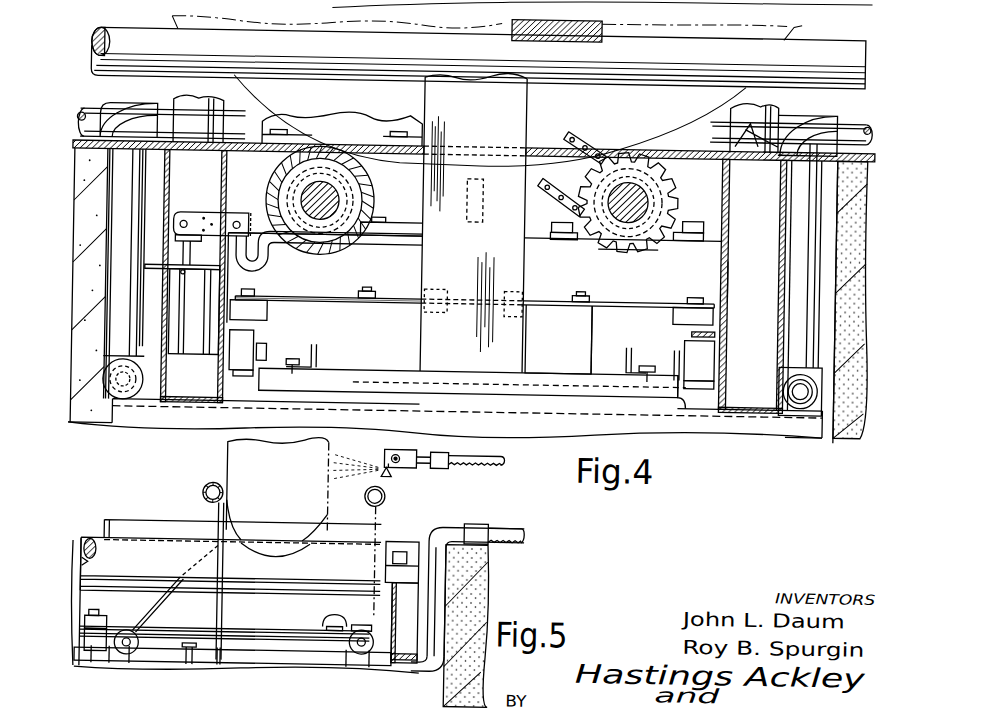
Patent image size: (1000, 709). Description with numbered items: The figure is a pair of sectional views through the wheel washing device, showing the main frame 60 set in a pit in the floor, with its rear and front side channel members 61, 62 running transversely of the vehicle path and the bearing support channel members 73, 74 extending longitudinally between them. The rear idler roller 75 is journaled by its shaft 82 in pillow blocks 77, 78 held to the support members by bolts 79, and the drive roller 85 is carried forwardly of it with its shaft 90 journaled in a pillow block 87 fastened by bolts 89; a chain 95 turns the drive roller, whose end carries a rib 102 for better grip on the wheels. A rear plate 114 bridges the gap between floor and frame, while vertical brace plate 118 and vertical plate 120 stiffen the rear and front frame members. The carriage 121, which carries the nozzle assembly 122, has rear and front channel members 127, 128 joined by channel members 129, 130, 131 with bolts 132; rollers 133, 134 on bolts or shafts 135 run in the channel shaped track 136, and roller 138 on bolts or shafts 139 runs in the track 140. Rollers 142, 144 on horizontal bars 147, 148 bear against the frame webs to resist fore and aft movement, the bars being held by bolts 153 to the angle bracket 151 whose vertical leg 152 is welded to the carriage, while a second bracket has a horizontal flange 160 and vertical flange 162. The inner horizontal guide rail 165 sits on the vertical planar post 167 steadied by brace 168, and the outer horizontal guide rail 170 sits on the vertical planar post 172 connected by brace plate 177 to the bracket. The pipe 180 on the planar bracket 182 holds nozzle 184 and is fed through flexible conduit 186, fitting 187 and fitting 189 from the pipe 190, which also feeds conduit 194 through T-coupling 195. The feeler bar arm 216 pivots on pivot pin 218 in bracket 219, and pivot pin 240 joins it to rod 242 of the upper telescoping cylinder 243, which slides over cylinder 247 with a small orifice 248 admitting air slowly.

In FIG. 4, the main frame 60 is at (800, 437).
In FIG. 4, the rear side channel member 61 is at (224, 172).
In FIG. 4, the front side channel member 62 is at (731, 262).
In FIG. 4, the bearing support channel member 73 is at (730, 228).
In FIG. 5, the bearing support channel member 74 is at (390, 572).
In FIG. 4, the rear idler roller 75 is at (345, 235).
In FIG. 4, the pillow block 77 is at (386, 219).
In FIG. 5, the pillow block 78 is at (400, 545).
In FIG. 5, the bolt 79 is at (420, 556).
In FIG. 4, the shaft 82 is at (320, 216).
In FIG. 5, the shaft 82 is at (393, 548).
In FIG. 4, the drive roller 85 is at (613, 244).
In FIG. 4, the pillow block 87 is at (700, 222).
In FIG. 4, the bolt 89 is at (556, 214).
In FIG. 4, the shaft 90 is at (650, 238).
In FIG. 4, the chain 95 is at (577, 125).
In FIG. 4, the rib 102 is at (688, 157).
In FIG. 4, the rear plate 114 is at (779, 113).
In FIG. 4, the vertical brace plate 118 is at (172, 155).
In FIG. 4, the vertical plate 120 is at (781, 185).
In FIG. 5, the vertical plate 120 is at (440, 522).
In FIG. 4, the carriage 121 is at (693, 398).
In FIG. 5, the carriage 121 is at (182, 658).
In FIG. 5, the nozzle assembly 122 is at (451, 484).
In FIG. 4, the rear channel member 127 is at (322, 350).
In FIG. 5, the rear channel member 127 is at (283, 655).
In FIG. 4, the front channel member 128 is at (636, 342).
In FIG. 5, the channel member 129 is at (140, 658).
In FIG. 5, the channel member 130 is at (243, 660).
In FIG. 4, the channel member 131 is at (617, 388).
In FIG. 5, the channel member 131 is at (368, 672).
In FIG. 4, the bolt 132 is at (305, 355).
In FIG. 5, the bolt 132 is at (203, 660).
In FIG. 5, the roller 133 is at (150, 632).
In FIG. 4, the roller 134 is at (260, 338).
In FIG. 5, the roller 134 is at (372, 660).
In FIG. 4, the bolt or shaft 135 is at (272, 346).
In FIG. 4, the channel shaped track 136 is at (250, 374).
In FIG. 4, the roller 138 is at (718, 350).
In FIG. 4, the bolt or shaft 139 is at (680, 342).
In FIG. 4, the channel shaped track 140 is at (720, 385).
In FIG. 4, the roller 142 is at (728, 305).
In FIG. 4, the roller 144 is at (272, 309).
In FIG. 4, the horizontal bar 147 is at (628, 293).
In FIG. 4, the horizontal bar 148 is at (333, 298).
In FIG. 4, the angle bracket 151 is at (603, 326).
In FIG. 4, the vertical leg 152 is at (585, 358).
In FIG. 5, the vertical leg 152 is at (330, 655).
In FIG. 4, the bolt 153 is at (379, 290).
In FIG. 5, the horizontal flange 160 is at (114, 625).
In FIG. 5, the vertical flange 162 is at (103, 660).
In FIG. 5, the inner horizontal guide rail 165 is at (208, 493).
In FIG. 5, the vertical planar post 167 is at (232, 602).
In FIG. 5, the brace 168 is at (180, 593).
In FIG. 4, the outer horizontal guide rail 170 is at (381, 74).
In FIG. 5, the outer horizontal guide rail 170 is at (371, 494).
In FIG. 4, the vertical planar post 172 is at (527, 250).
In FIG. 5, the vertical planar post 172 is at (374, 517).
In FIG. 5, the brace plate 177 is at (330, 611).
In FIG. 5, the conduit or pipe 180 is at (420, 457).
In FIG. 5, the planar bracket 182 is at (385, 463).
In FIG. 5, the nozzle 184 is at (392, 446).
In FIG. 5, the flexible conduit 186 is at (512, 520).
In FIG. 5, the fitting 187 is at (455, 446).
In FIG. 5, the fitting 189 is at (482, 517).
In FIG. 4, the pipe 190 is at (804, 400).
In FIG. 4, the conduit 194 is at (853, 110).
In FIG. 4, the T-coupling 195 is at (782, 352).
In FIG. 4, the arm 216 is at (284, 258).
In FIG. 4, the pivot pin 218 is at (230, 210).
In FIG. 4, the bracket 219 is at (238, 217).
In FIG. 4, the pivot pin 240 is at (184, 210).
In FIG. 4, the rod 242 is at (188, 256).
In FIG. 4, the upper telescoping cylinder 243 is at (150, 298).
In FIG. 4, the cylinder 247 is at (180, 360).
In FIG. 4, the orifice 248 is at (190, 270).